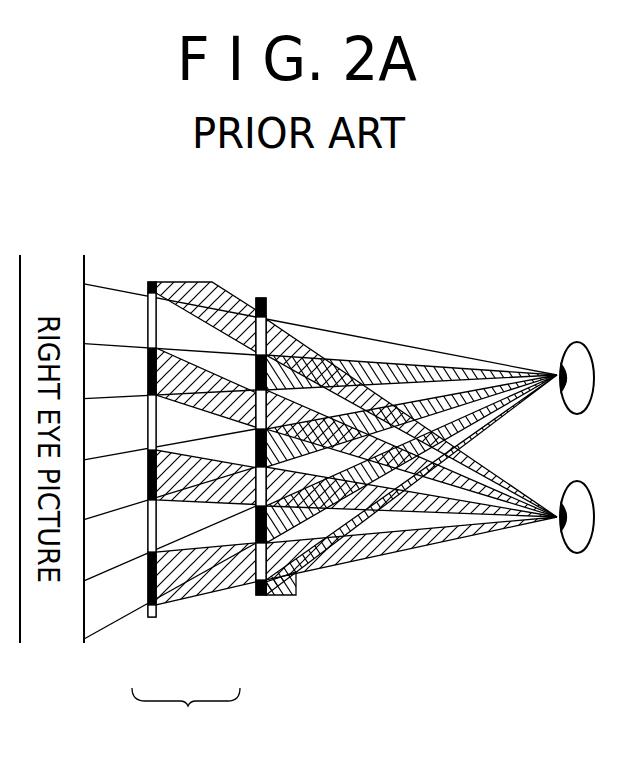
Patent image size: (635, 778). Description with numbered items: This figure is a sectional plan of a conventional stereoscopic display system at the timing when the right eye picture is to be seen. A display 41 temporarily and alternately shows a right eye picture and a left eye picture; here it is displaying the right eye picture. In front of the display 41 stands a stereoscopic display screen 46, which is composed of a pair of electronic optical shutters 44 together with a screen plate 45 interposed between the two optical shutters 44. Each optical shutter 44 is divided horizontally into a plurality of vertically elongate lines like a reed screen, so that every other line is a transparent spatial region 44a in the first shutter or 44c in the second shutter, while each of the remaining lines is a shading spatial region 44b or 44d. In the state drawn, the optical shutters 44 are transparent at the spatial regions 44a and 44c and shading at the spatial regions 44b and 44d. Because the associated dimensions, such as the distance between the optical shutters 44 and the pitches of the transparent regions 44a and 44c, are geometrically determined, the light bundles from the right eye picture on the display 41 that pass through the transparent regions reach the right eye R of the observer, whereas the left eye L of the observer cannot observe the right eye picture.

The display 41 is at (86, 262).
The electronic optical shutters 44 is at (153, 618).
The transparent spatial region 44a is at (147, 303).
The shading spatial region 44b is at (147, 368).
The transparent spatial region 44c is at (253, 322).
The shading spatial region 44d is at (253, 373).
The screen plate 45 is at (193, 598).
The stereoscopic display screen 46 is at (186, 713).
The right eye R is at (574, 341).
The left eye L is at (578, 554).